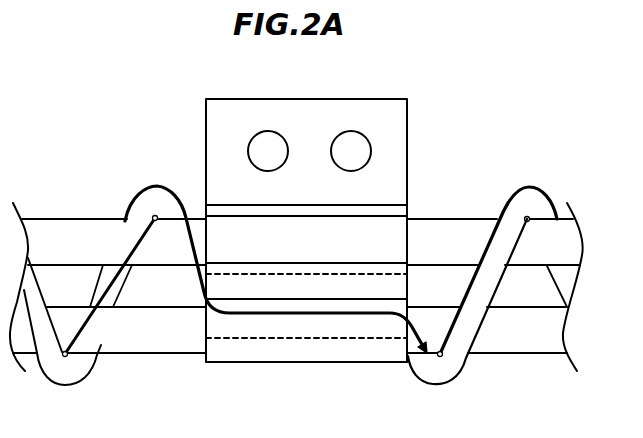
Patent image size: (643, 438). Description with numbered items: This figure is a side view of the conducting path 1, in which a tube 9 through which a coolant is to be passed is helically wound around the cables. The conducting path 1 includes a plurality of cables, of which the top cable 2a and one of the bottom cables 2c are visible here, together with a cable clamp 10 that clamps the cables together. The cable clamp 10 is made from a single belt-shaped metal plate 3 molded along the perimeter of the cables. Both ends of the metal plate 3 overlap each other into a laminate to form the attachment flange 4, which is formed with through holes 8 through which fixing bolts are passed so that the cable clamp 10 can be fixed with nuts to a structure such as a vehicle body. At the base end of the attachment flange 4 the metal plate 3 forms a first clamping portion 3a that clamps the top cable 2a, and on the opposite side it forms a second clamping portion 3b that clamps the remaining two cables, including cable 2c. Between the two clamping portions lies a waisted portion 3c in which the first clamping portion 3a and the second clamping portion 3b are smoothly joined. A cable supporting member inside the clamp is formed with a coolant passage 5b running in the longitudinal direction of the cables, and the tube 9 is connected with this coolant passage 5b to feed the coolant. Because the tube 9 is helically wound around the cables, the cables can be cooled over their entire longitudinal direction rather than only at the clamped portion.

The conducting path 1 is at (47, 80).
The cable 2a is at (72, 219).
The cable 2c is at (133, 348).
The metal plate 3 is at (204, 362).
The first clamping portion 3a is at (397, 230).
The second clamping portion 3b is at (389, 357).
The waisted portion 3c is at (397, 272).
The attachment flange 4 is at (407, 127).
The coolant passage 5b is at (307, 335).
The through holes 8 is at (270, 131).
The tube 9 is at (157, 190).
The cable clamp 10 is at (205, 98).